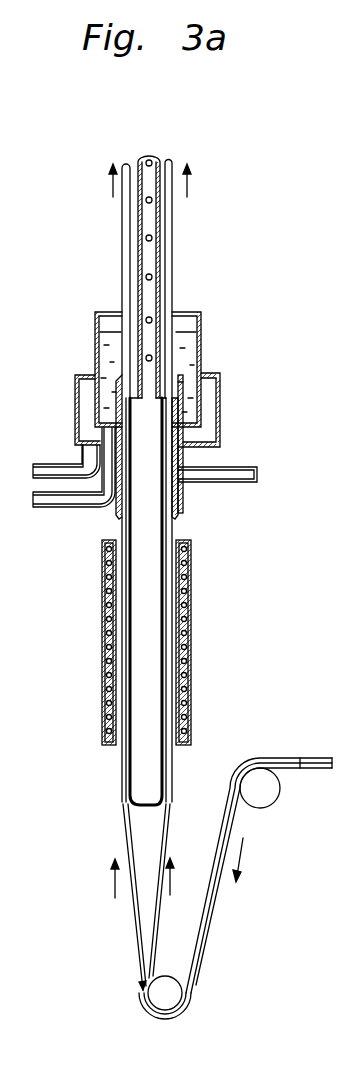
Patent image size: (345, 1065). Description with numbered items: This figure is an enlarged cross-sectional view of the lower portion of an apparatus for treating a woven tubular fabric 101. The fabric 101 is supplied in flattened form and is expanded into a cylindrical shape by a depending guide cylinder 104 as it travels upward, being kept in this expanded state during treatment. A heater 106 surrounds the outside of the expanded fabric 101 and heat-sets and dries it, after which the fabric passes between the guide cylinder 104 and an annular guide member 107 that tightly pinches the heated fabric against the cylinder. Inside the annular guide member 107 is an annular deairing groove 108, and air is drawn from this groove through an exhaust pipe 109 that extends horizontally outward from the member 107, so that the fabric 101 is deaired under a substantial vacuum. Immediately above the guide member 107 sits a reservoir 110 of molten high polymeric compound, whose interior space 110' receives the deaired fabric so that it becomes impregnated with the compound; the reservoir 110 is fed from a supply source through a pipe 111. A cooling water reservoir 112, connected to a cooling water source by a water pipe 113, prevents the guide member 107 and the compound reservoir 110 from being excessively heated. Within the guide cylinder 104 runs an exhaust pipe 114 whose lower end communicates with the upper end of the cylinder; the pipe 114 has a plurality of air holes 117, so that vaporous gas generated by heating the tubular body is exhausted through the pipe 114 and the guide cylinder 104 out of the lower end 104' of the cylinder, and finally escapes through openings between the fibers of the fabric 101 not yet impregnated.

The tubular fabric 101 is at (213, 892).
The guide cylinder 104 is at (118, 483).
The lower end of the guide cylinder 104' is at (129, 911).
The heater 106 is at (188, 658).
The annular guide member 107 is at (180, 510).
The annular deairing groove 108 is at (182, 483).
The exhaust pipe 109 is at (259, 471).
The molten high polymeric compound reservoir 110 is at (183, 371).
The chamber of housing block 110' is at (188, 372).
The pipe 111 is at (33, 497).
The cooling water reservoir 112 is at (87, 413).
The water pipe 113 is at (33, 466).
The exhaust pipe 114 is at (150, 216).
The air holes 117 is at (152, 275).